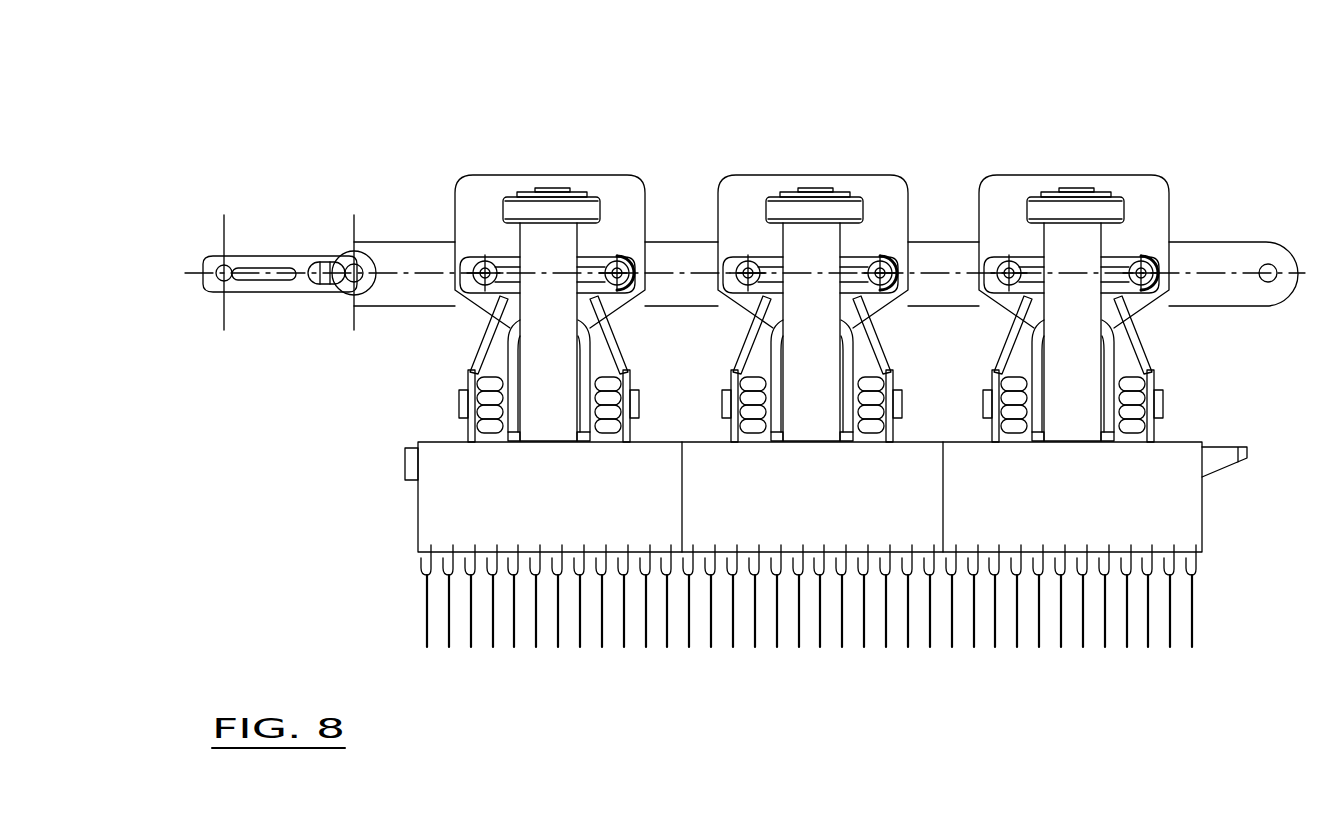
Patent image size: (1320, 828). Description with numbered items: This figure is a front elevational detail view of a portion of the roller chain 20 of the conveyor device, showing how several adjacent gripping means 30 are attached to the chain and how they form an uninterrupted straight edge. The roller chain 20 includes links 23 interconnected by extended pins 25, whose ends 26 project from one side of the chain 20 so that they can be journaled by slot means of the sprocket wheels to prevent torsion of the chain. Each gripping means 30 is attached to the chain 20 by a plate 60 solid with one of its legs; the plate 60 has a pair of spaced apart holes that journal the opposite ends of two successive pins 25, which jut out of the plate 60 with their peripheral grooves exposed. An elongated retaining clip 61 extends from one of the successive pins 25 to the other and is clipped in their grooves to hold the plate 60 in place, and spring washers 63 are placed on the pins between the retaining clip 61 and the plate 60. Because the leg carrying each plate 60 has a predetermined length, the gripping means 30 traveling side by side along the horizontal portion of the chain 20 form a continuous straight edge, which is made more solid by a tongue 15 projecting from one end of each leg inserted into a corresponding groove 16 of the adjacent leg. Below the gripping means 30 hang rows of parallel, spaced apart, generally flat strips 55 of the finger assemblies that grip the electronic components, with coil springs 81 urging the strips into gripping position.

The tongue 15 is at (1227, 462).
The groove 16 is at (407, 477).
The roller chain 20 is at (1220, 233).
The links 23 is at (670, 240).
The extended pins 25 is at (470, 258).
The ends 26 is at (480, 257).
The gripping means 30 is at (450, 458).
The strips 55 is at (1148, 647).
The plate 60 is at (627, 187).
The retaining clip 61 is at (275, 293).
The spring washers 63 is at (720, 292).
The coil spring 81 is at (1200, 578).